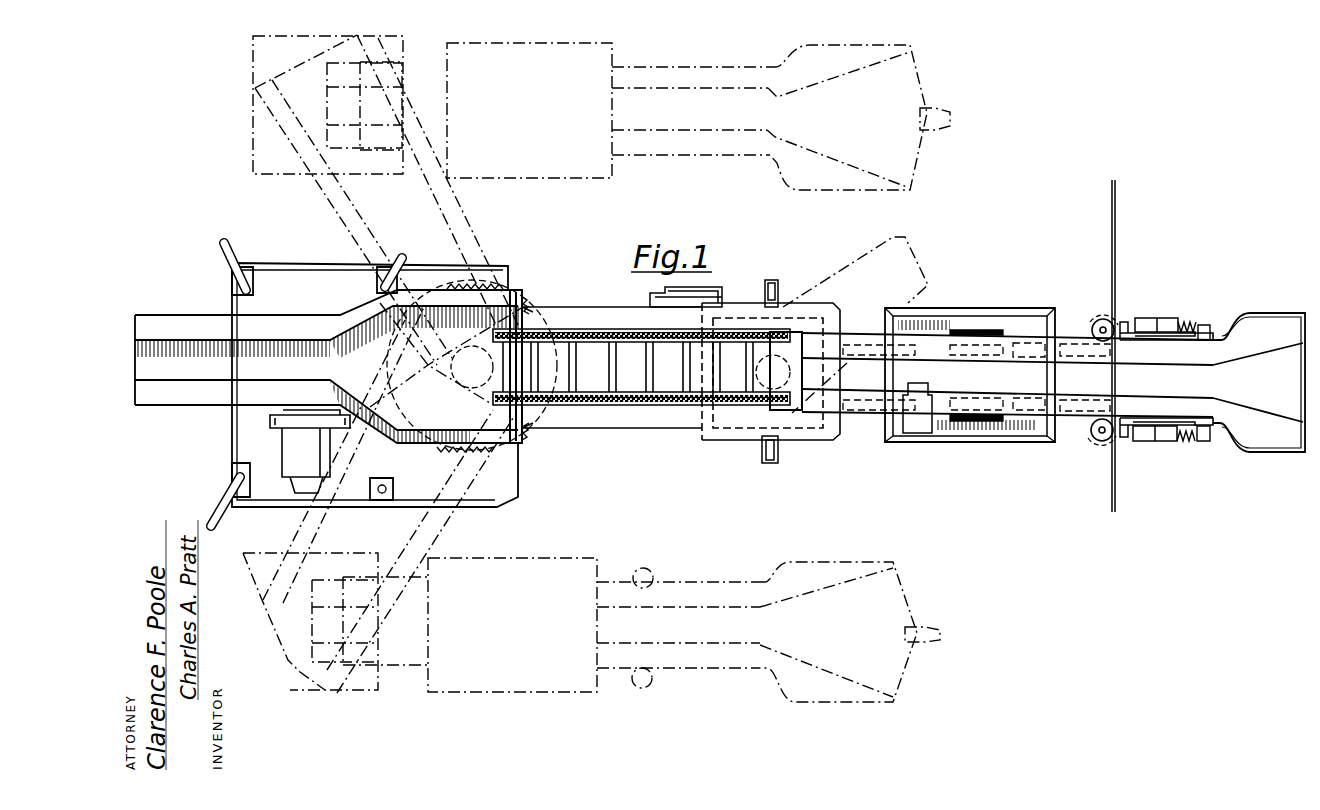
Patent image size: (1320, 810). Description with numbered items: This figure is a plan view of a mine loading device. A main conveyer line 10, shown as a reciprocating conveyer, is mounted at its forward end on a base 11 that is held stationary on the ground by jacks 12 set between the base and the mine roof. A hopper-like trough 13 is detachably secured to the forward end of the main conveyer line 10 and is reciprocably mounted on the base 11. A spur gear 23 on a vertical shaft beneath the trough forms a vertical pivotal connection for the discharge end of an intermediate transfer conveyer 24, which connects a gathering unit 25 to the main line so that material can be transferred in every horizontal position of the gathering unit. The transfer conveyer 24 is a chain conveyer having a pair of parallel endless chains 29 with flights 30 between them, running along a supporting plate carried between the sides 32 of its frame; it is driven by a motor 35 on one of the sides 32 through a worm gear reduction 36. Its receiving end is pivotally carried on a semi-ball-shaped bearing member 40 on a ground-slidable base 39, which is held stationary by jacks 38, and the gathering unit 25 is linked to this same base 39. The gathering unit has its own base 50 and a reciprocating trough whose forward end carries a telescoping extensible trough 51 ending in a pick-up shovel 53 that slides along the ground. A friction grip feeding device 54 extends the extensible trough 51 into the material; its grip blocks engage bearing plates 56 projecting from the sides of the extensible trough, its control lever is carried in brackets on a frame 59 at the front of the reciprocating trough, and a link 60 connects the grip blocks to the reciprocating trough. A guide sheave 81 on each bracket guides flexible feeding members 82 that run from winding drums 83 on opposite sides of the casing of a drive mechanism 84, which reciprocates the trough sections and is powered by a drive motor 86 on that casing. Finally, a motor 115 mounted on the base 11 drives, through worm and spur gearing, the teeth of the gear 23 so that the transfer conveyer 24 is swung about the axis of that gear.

The main conveyer line 10 is at (205, 395).
The base 11 is at (330, 265).
The jacks 12 is at (238, 257).
The hopper-like trough 13 is at (523, 292).
The spur gear 23 is at (477, 287).
The intermediate transfer conveyer 24 is at (640, 312).
The gathering unit 25 is at (1038, 436).
The endless chains 29 is at (637, 355).
The flights 30 is at (606, 366).
The sides 32 is at (589, 310).
The motor 35 is at (727, 290).
The worm gear reduction 36 is at (765, 298).
The jacks 38 is at (762, 455).
The base 39 is at (700, 440).
The semi-ball-shaped bearing member 40 is at (790, 412).
The base 50 is at (980, 313).
The extensible trough 51 is at (857, 345).
The shovel 53 is at (1268, 313).
The feeding device 54 is at (1190, 321).
The bearing plates 56 is at (1160, 318).
The frame 59 is at (1128, 322).
The link 60 is at (1170, 423).
The guide sheave 81 is at (1104, 319).
The flexible feeding members 82 is at (1117, 264).
The winding drums 83 is at (990, 330).
The drive mechanism 84 is at (1022, 345).
The drive motor 86 is at (920, 434).
The motor 115 is at (332, 463).